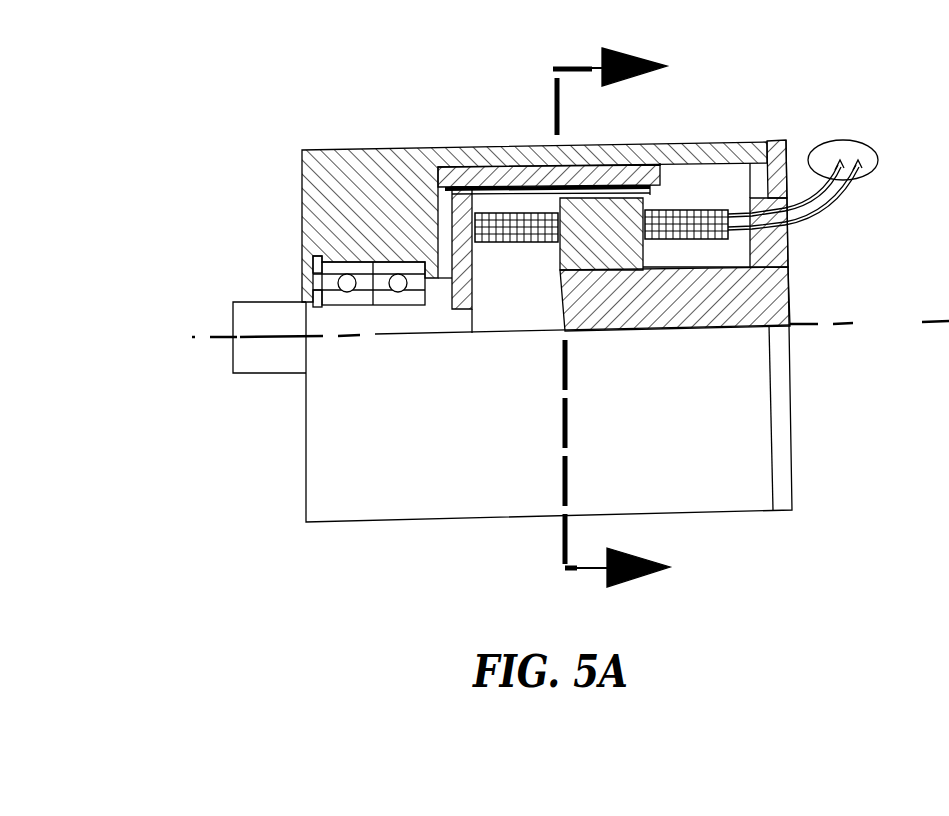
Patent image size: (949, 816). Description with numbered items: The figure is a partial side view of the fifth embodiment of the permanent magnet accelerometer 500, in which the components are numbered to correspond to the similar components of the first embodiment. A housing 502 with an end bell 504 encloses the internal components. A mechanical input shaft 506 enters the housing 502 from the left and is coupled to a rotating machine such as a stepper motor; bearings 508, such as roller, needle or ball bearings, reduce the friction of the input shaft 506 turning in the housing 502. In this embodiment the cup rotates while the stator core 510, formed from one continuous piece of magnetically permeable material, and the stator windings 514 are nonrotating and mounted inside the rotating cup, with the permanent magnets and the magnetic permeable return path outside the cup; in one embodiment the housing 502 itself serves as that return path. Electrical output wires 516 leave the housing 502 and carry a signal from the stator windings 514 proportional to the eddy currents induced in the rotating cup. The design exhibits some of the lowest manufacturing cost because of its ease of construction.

The accelerometer 500 is at (686, 645).
The housing 502 is at (323, 155).
The end bell 504 is at (793, 505).
The mechanical input shaft 506 is at (233, 315).
The bearings 508 is at (367, 306).
The stator core 510 is at (656, 168).
The stator windings 514 is at (752, 228).
The electrical output wires 516 is at (850, 142).